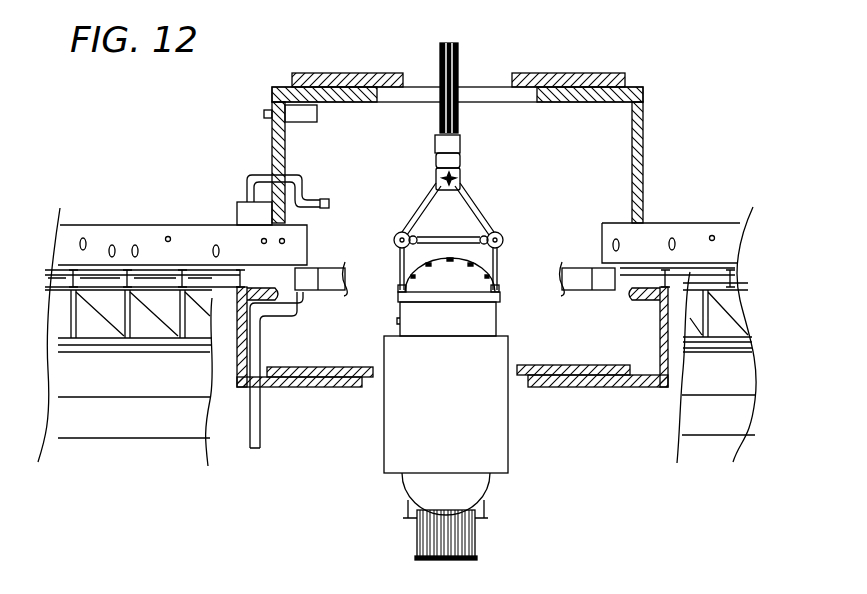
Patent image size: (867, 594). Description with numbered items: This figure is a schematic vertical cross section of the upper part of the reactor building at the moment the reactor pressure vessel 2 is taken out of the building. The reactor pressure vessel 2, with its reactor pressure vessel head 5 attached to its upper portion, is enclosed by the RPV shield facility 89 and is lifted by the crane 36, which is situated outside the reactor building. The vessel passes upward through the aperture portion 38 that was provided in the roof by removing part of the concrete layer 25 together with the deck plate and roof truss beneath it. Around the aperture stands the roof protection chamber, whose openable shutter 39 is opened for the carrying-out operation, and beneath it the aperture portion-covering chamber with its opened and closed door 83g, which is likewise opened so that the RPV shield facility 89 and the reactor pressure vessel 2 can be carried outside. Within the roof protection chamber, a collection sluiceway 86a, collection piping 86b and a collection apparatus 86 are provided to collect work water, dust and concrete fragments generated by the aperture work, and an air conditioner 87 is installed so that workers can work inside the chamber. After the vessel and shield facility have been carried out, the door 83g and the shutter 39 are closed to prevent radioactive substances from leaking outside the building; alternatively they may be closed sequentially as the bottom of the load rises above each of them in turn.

The reactor pressure vessel 2 is at (494, 318).
The reactor pressure vessel head 5 is at (462, 258).
The concrete layer 25 is at (703, 223).
The crane 36 is at (460, 72).
The aperture portion 38 is at (553, 252).
The shutter 39 is at (557, 73).
The opened and closed door 83g is at (578, 378).
The collection apparatus 86 is at (237, 207).
The collection sluiceway 86a is at (327, 198).
The collection piping 86b is at (250, 174).
The air conditioner 87 is at (316, 101).
The RPV shield facility 89 is at (506, 447).